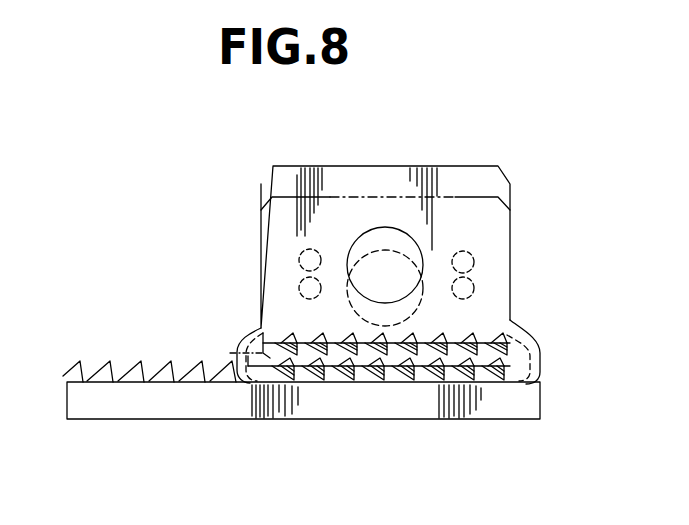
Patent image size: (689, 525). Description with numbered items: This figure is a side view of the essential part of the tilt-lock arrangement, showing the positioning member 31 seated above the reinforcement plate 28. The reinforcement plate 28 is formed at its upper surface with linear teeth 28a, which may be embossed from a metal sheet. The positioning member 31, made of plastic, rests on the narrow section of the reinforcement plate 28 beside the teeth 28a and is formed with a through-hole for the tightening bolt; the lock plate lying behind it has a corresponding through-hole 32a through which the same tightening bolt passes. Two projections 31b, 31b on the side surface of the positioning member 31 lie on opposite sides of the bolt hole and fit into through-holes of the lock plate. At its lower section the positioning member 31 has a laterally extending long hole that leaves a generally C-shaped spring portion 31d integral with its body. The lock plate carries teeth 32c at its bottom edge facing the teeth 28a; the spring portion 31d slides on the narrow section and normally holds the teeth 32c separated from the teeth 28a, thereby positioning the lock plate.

The reinforcement plate 28 is at (372, 412).
The teeth 28a is at (135, 367).
The positioning member 31 is at (452, 197).
The projections 31b is at (298, 286).
The spring portion 31d is at (550, 367).
The through-hole 32a is at (395, 250).
The teeth 32c is at (433, 343).